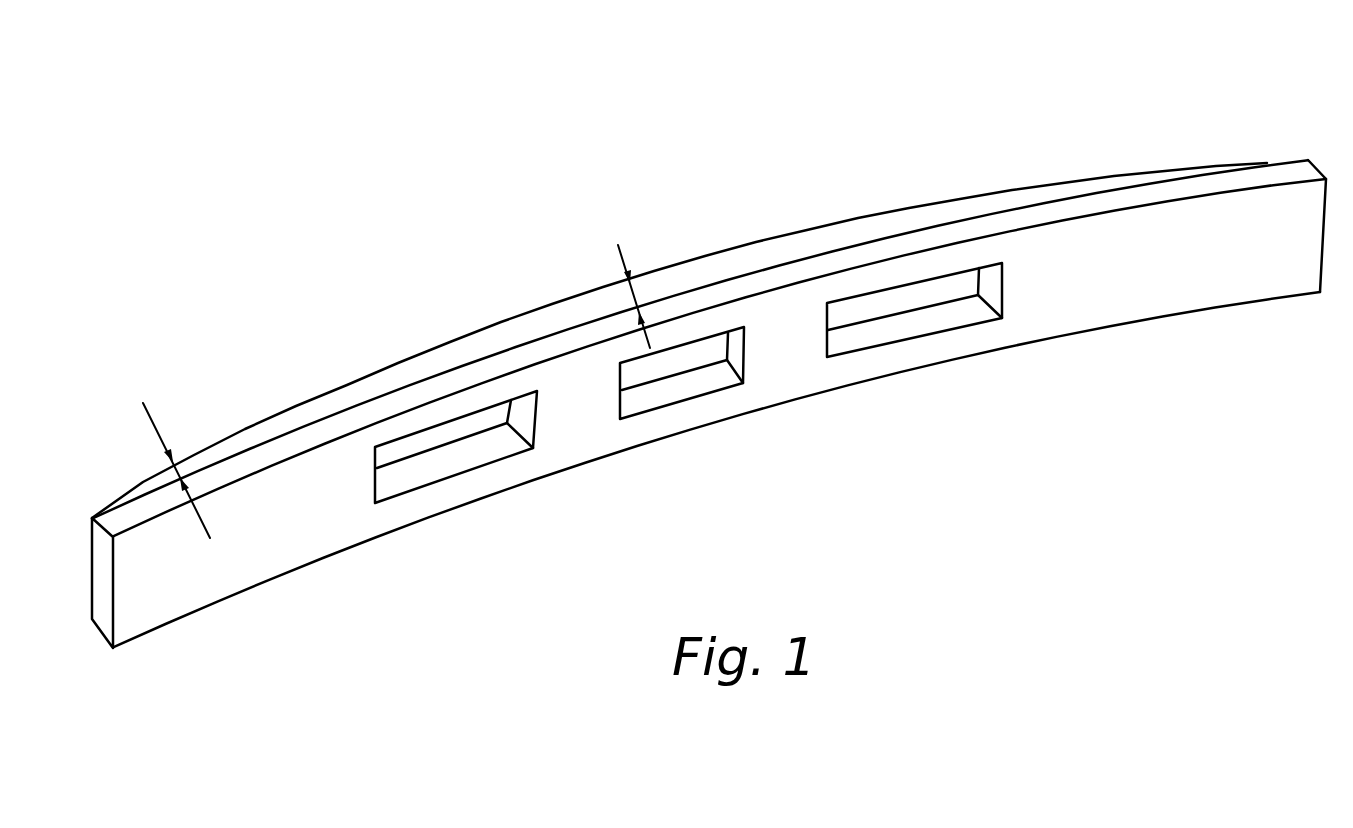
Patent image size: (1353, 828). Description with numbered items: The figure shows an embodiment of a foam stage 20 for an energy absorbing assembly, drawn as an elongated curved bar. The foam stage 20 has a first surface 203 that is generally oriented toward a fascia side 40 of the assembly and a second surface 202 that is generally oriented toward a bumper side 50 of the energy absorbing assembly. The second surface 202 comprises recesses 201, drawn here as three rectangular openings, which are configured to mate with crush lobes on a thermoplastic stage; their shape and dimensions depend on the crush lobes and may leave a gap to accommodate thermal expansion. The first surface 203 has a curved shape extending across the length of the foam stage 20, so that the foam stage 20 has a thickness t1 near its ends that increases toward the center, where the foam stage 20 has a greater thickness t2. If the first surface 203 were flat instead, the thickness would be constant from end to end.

The foam stage 20 is at (318, 159).
The fascia side 40 is at (312, 393).
The bumper side 50 is at (213, 588).
The recesses 201 is at (478, 461).
The second surface 202 is at (1128, 293).
The first surface 203 is at (480, 332).
The thickness at the ends t1 is at (157, 472).
The thickness at the center t2 is at (628, 300).